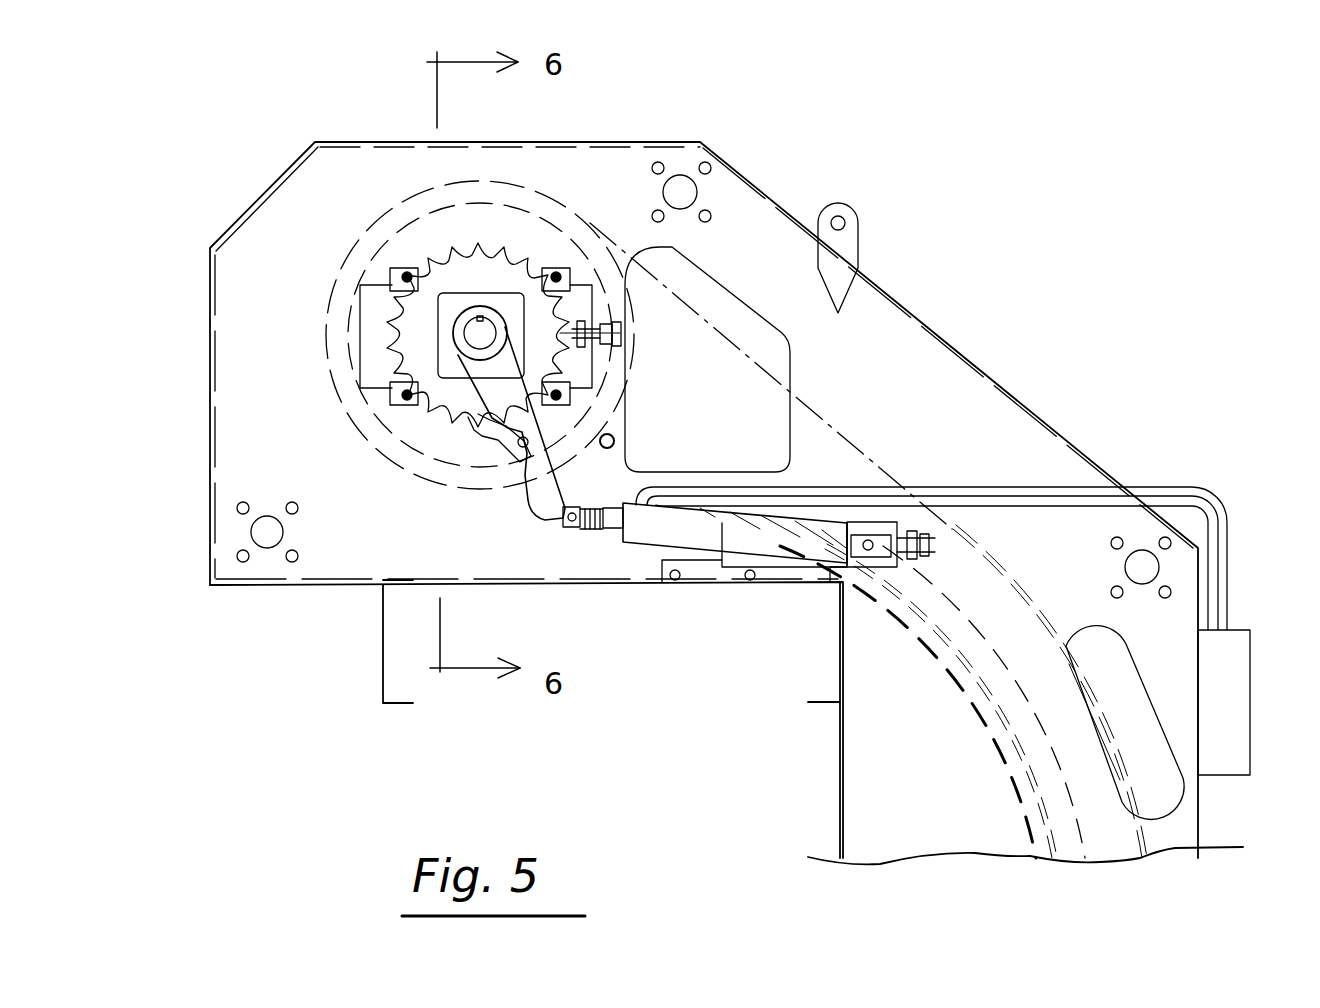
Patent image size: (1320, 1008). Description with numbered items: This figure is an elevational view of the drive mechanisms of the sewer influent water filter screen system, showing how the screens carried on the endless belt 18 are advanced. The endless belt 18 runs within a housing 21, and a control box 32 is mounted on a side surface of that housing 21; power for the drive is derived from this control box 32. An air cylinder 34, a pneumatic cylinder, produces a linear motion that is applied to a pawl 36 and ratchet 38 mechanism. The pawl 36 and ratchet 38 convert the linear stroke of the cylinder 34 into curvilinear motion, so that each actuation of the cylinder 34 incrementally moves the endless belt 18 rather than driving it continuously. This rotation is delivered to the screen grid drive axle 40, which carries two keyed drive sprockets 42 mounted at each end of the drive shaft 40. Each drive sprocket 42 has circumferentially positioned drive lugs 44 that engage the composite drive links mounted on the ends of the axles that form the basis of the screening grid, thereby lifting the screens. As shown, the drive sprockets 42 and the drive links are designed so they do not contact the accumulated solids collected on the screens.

The endless belt 18 is at (848, 437).
The housing 21 is at (1078, 443).
The control box 32 is at (1228, 777).
The air cylinder 34 is at (683, 542).
The pawl 36 is at (528, 507).
The ratchet 38 is at (442, 417).
The screen grid drive axle 40 is at (480, 334).
The drive sprocket 42 is at (347, 238).
The drive lugs 44 is at (343, 410).